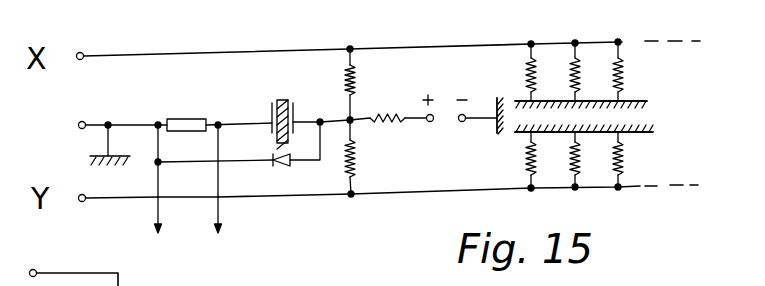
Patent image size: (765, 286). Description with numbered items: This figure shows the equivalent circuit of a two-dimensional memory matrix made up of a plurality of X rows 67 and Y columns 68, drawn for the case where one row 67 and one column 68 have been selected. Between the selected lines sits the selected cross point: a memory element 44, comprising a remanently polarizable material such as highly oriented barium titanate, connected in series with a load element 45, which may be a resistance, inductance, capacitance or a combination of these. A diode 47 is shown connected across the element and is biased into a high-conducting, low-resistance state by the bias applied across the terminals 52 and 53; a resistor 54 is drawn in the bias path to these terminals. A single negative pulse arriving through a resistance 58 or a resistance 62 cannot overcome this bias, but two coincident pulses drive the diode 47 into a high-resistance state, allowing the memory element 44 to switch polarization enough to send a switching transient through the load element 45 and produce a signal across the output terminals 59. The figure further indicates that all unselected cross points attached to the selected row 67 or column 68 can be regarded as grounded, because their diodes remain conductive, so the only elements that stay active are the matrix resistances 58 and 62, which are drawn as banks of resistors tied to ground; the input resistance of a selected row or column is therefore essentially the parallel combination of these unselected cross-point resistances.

The X row 67 is at (152, 44).
The Y column 68 is at (115, 196).
The load element 45 is at (193, 109).
The memory element 44 is at (279, 96).
The diode 47 is at (284, 170).
The resistance 58 is at (357, 77).
The resistance 62 is at (358, 157).
The resistor 54 is at (373, 108).
The terminal 52 is at (431, 127).
The terminal 53 is at (477, 124).
The output terminals 59 is at (215, 208).